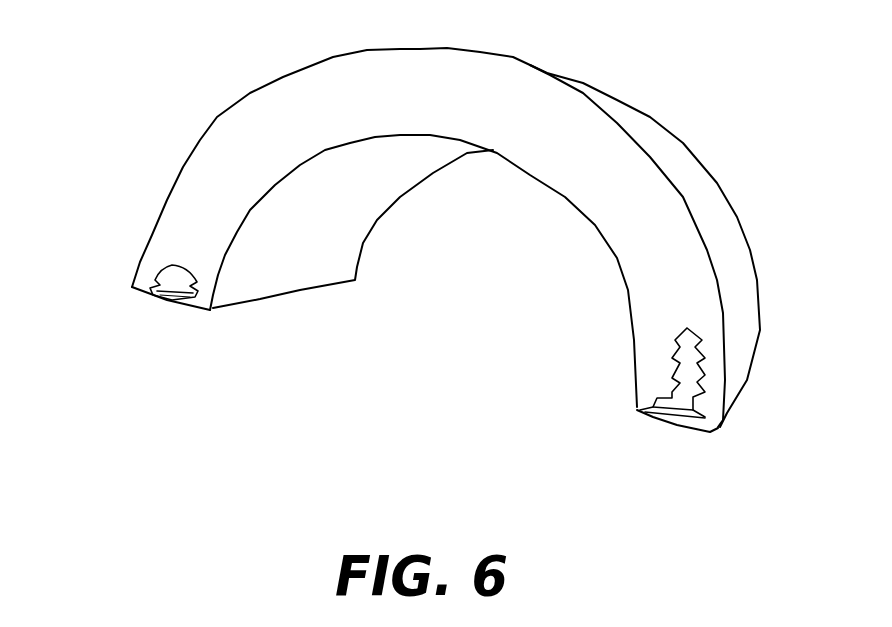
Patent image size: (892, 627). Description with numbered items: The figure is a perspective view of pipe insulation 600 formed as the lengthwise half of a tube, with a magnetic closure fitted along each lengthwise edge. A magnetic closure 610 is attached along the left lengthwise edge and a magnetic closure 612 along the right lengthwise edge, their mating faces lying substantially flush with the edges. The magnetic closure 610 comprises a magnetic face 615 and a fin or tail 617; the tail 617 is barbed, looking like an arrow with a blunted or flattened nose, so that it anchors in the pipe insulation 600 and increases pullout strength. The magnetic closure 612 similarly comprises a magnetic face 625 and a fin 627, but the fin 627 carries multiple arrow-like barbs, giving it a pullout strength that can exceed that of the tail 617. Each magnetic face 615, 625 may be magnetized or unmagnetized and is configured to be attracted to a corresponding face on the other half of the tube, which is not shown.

The pipe insulation 600 is at (196, 43).
The magnetic closure 610 is at (179, 322).
The magnetic closure 612 is at (666, 447).
The magnetic face 615 is at (172, 292).
The tail 617 is at (172, 272).
The magnetic face 625 is at (650, 418).
The fin 627 is at (684, 355).